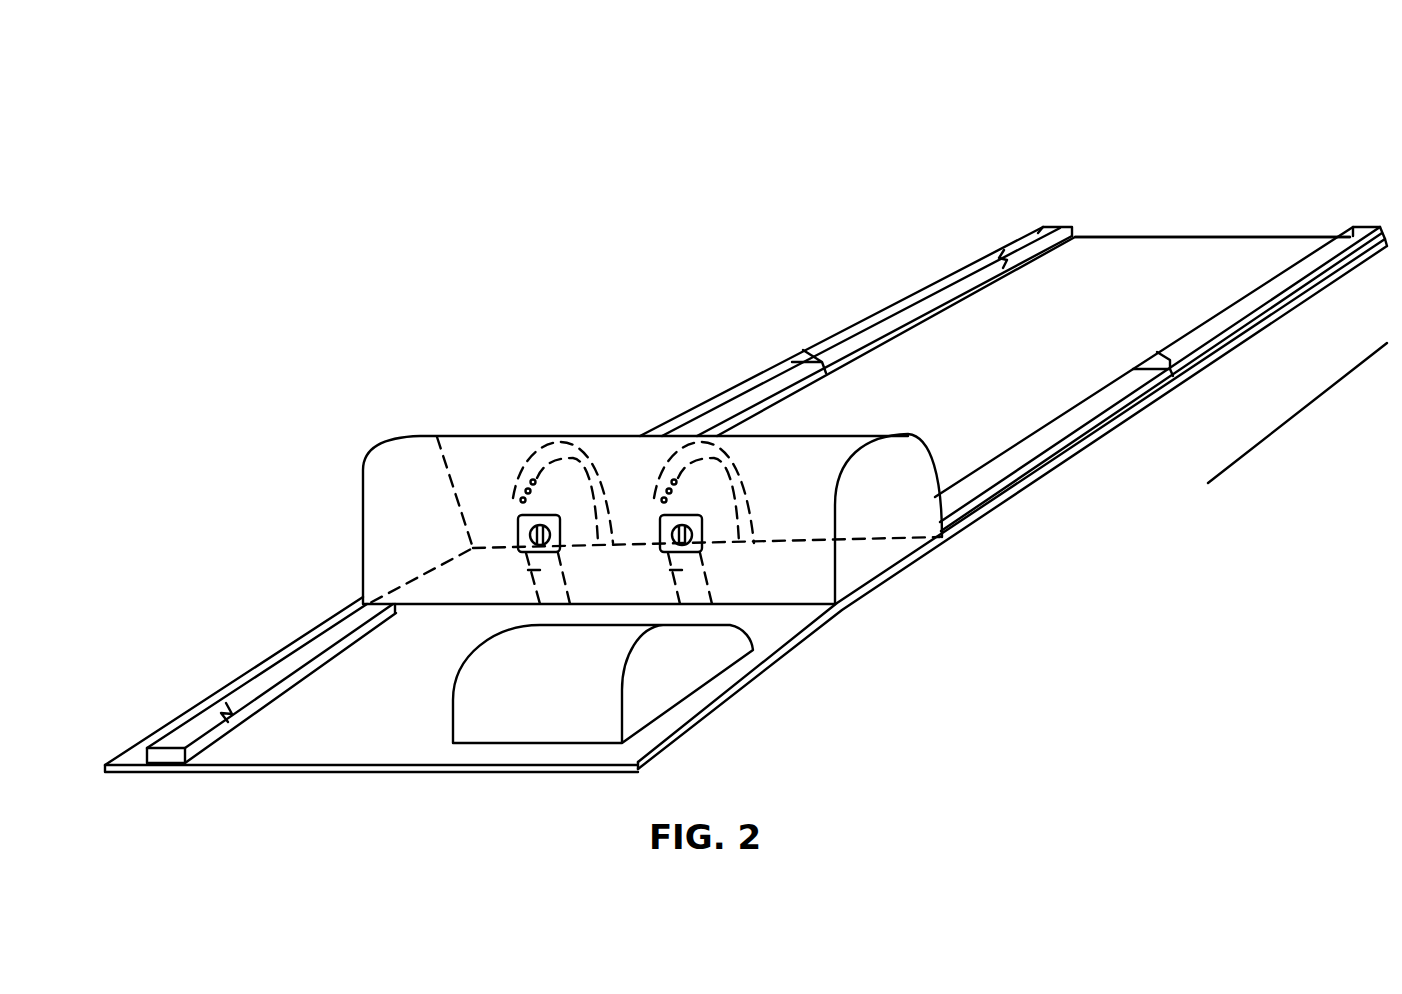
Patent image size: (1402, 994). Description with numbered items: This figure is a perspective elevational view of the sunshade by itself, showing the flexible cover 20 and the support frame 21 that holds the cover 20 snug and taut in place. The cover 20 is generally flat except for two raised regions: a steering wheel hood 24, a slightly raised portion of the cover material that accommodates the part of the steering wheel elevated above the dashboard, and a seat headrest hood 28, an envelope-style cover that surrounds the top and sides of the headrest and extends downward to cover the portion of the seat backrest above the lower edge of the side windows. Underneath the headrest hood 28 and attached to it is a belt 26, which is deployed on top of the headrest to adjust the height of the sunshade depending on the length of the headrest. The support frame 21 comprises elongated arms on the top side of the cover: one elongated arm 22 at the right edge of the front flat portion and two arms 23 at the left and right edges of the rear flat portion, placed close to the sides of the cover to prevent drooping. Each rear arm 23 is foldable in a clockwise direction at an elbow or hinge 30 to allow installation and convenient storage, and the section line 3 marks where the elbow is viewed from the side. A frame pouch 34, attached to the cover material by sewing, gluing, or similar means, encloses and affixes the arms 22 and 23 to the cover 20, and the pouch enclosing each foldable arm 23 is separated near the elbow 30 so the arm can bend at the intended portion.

The flexible cover 20 is at (330, 732).
The support frame 21 is at (1076, 197).
The elongated arm 22 is at (185, 725).
The foldable arm 23 is at (1036, 229).
The steering wheel hood 24 is at (493, 715).
The belt 26 is at (705, 573).
The seat headrest hood 28 is at (457, 437).
The elbow or hinge 30 is at (803, 350).
The frame pouch 34 is at (288, 663).
The section line 3- 3 is at (1263, 358).